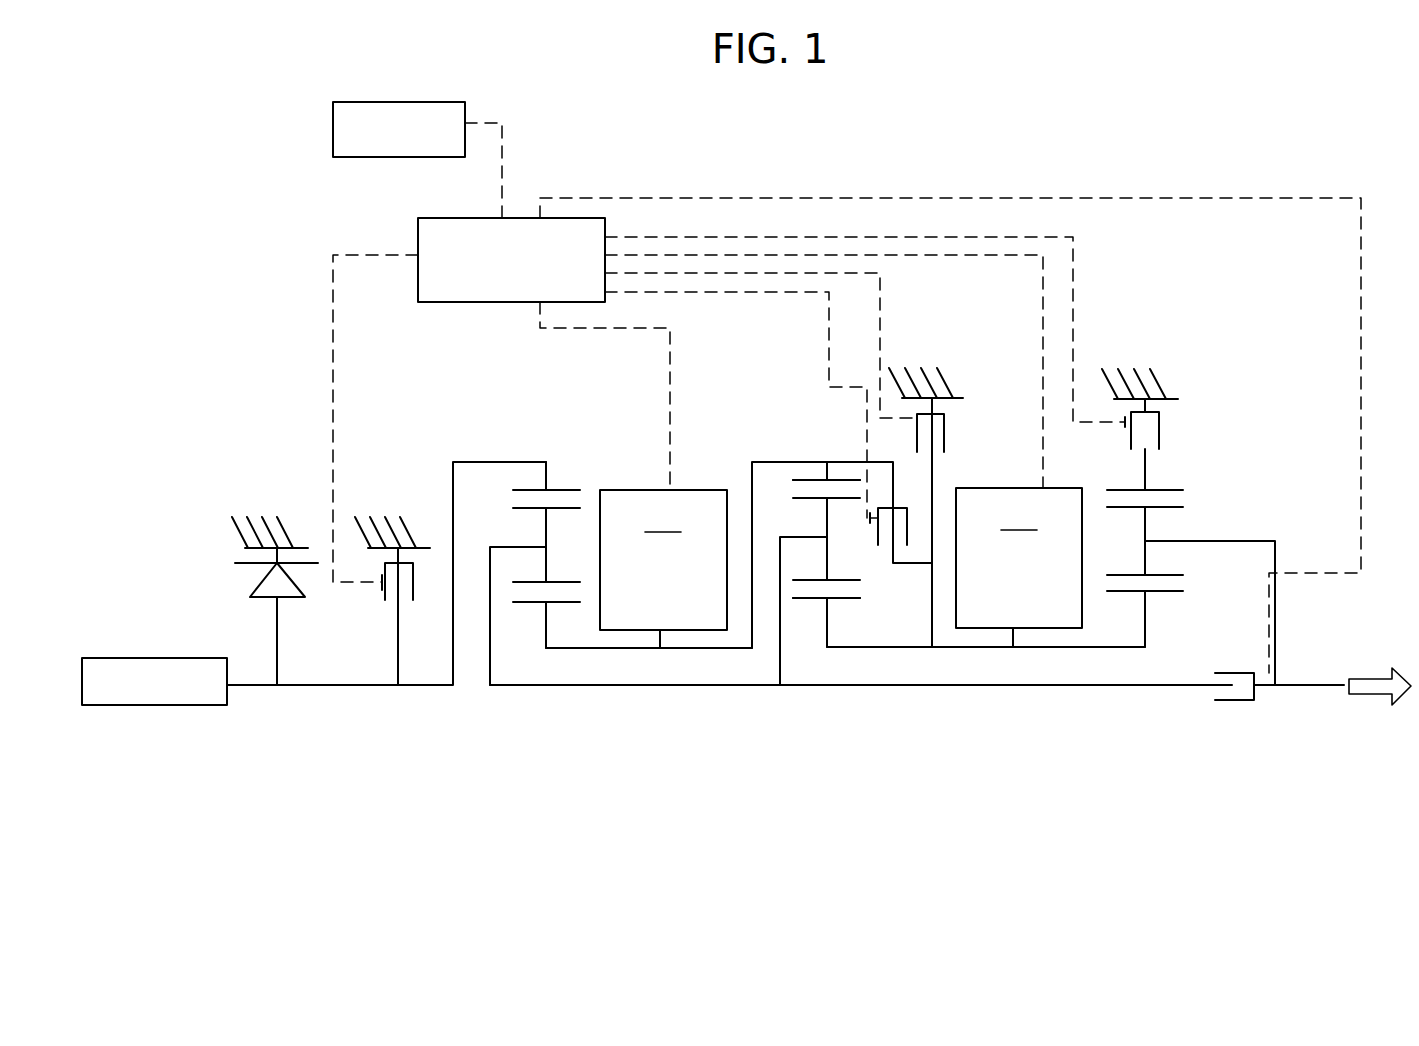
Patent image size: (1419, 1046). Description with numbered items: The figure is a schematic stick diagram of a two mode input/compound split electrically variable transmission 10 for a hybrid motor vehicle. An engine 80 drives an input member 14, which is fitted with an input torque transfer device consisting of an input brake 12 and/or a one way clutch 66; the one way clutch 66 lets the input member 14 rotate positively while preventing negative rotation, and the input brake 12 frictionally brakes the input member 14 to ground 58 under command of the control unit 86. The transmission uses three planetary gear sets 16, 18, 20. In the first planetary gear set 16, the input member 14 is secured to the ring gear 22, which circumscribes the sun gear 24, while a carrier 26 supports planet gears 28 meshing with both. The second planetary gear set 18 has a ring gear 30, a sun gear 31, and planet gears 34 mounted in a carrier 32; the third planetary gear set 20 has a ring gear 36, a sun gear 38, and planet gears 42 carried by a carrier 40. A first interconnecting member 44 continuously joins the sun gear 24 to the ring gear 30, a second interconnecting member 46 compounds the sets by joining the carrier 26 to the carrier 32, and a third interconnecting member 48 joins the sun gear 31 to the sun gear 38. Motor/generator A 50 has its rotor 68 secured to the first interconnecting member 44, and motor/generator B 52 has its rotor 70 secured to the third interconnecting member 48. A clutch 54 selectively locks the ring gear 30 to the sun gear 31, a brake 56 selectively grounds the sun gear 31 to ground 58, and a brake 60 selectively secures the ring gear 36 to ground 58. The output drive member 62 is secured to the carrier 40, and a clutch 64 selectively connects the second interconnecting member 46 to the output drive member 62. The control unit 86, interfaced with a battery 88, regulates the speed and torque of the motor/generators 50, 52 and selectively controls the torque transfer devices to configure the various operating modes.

The electrically variable transmission 10 is at (572, 852).
The input brake 12 is at (415, 582).
The input member 14 is at (260, 683).
The first planetary gear set 16 is at (550, 513).
The second planetary gear set 18 is at (798, 529).
The third planetary gear set 20 is at (1197, 557).
The ring gear 22 is at (560, 488).
The sun gear 24 is at (530, 605).
The carrier 26 is at (506, 586).
The planet gears 28 is at (548, 527).
The ring gear 30 is at (843, 477).
The sun gear 31 is at (843, 600).
The carrier 32 is at (803, 536).
The planet gears 34 is at (825, 520).
The ring gear 36 is at (1128, 488).
The sun gear 38 is at (1168, 595).
The carrier 40 is at (1245, 540).
The planet gears 42 is at (1142, 523).
The first interconnecting member 44 is at (612, 648).
The second interconnecting member 46 is at (672, 685).
The third interconnecting member 48 is at (1100, 658).
The motor/generator A 50 is at (640, 570).
The motor/generator B 52 is at (1049, 567).
The clutch 54 is at (898, 506).
The brake 56 is at (945, 425).
The ground 58 is at (270, 530).
The brake 60 is at (1160, 420).
The output drive member 62 is at (1315, 683).
The clutch 64 is at (1232, 700).
The one way clutch 66 is at (262, 575).
The rotor 68 is at (658, 640).
The rotor 70 is at (1014, 636).
The engine 80 is at (173, 705).
The control unit 86 is at (458, 302).
The battery 88 is at (417, 143).